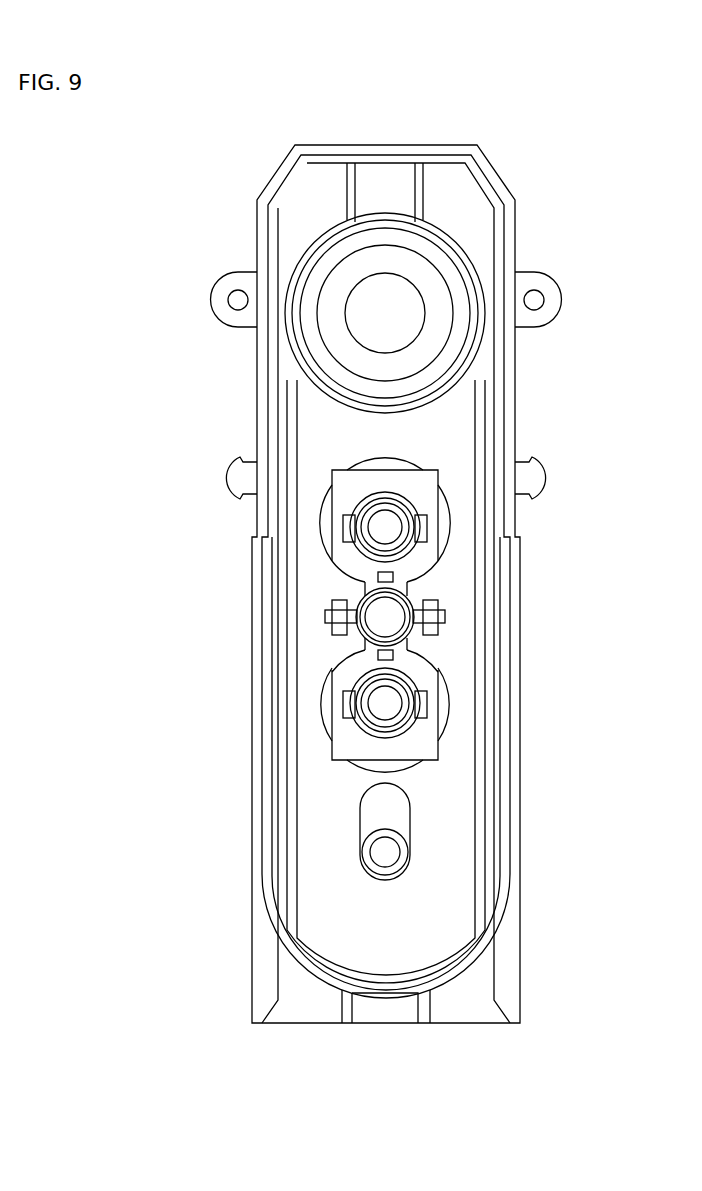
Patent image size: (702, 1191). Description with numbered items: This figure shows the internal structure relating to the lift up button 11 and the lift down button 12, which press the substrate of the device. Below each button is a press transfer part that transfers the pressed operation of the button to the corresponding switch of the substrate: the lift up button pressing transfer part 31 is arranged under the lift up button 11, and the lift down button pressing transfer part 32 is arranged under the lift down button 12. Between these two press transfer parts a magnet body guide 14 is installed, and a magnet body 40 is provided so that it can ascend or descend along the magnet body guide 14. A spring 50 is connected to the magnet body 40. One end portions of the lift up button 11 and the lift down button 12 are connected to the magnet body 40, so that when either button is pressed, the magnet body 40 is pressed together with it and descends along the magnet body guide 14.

The lift up button 11 is at (450, 523).
The lift down button 12 is at (443, 673).
The magnet body guide 14 is at (325, 613).
The lift up button pressing transfer part 31 is at (347, 485).
The lift down button pressing transfer part 32 is at (345, 735).
The magnet body 40 is at (380, 608).
The spring 50 is at (408, 602).